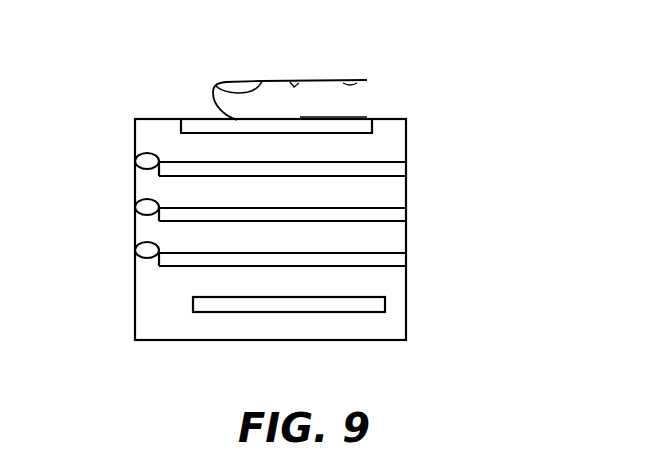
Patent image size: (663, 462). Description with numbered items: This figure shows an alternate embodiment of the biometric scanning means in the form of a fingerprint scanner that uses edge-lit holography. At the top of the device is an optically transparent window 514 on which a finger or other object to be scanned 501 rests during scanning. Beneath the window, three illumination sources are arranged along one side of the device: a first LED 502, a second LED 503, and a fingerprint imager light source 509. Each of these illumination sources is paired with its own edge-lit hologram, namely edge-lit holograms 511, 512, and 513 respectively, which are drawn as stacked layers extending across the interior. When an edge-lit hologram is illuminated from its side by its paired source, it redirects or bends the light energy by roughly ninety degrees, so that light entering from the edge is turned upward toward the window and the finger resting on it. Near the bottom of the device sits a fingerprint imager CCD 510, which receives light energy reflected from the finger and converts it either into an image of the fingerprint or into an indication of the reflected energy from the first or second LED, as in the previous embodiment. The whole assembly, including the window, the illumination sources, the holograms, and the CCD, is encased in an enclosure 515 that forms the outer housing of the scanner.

The finger or other object to be scanned 501 is at (278, 80).
The first LED 502 is at (135, 160).
The second LED 503 is at (135, 207).
The fingerprint imager light source 509 is at (135, 250).
The fingerprint imager CCD 510 is at (262, 312).
The edge-lit hologram 511 is at (390, 176).
The edge-lit hologram 512 is at (390, 221).
The edge-lit hologram 513 is at (390, 266).
The optically transparent window 514 is at (357, 132).
The enclosure 515 is at (407, 331).